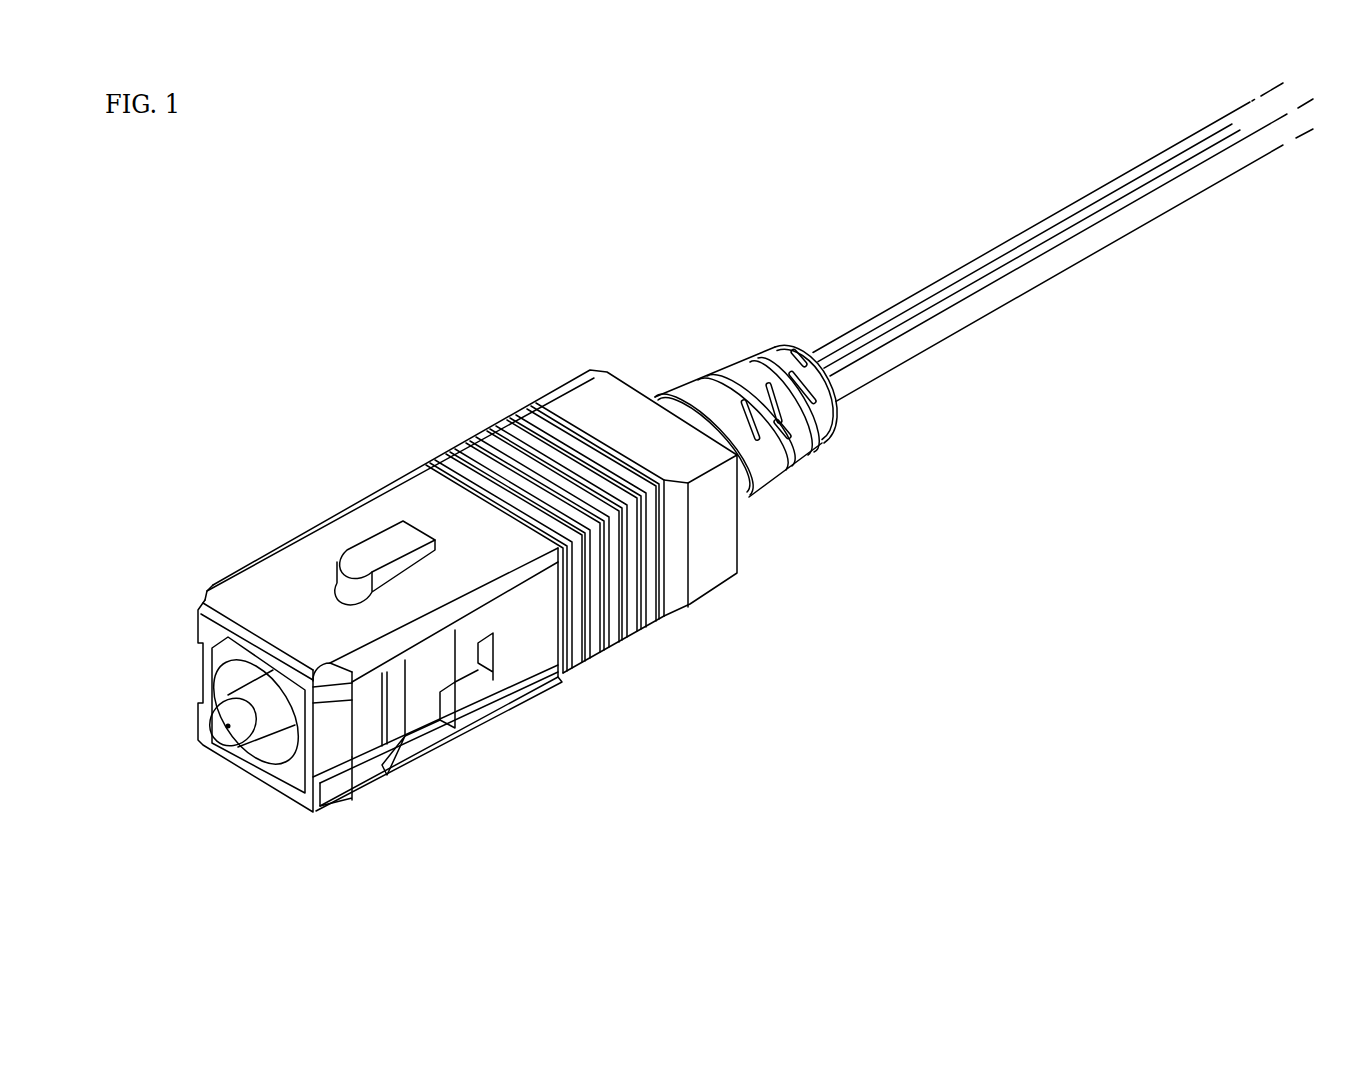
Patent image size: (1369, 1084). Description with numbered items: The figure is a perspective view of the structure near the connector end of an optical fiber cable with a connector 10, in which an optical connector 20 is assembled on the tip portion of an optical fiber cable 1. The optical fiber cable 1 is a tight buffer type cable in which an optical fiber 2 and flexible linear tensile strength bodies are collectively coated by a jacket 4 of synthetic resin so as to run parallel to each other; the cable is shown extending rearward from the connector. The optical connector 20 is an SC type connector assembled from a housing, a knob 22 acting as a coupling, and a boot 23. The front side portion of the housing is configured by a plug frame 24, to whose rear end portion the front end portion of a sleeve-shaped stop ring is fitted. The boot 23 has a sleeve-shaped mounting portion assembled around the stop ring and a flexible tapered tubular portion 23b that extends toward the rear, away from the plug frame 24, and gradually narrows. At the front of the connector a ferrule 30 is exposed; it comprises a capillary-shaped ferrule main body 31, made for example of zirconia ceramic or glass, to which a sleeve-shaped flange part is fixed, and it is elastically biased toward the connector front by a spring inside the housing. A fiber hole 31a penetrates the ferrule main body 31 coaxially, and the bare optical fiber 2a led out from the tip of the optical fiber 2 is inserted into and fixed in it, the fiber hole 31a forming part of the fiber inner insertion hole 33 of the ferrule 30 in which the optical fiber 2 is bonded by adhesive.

The optical fiber cable 1 is at (945, 279).
The optical fiber 2 is at (228, 726).
The bare optical fiber 2a is at (173, 787).
The jacket 4 is at (870, 322).
The optical fiber cable with a connector 10 is at (643, 306).
The optical connector 20 is at (561, 374).
The knob 22 is at (497, 706).
The boot 23 is at (759, 459).
The tapered tubular portion 23b is at (770, 478).
The plug frame 24 is at (293, 774).
The ferrule 30 is at (203, 783).
The ferrule main body 31 is at (268, 742).
The fiber hole 31a is at (226, 728).
The fiber inner insertion hole 33 is at (233, 722).